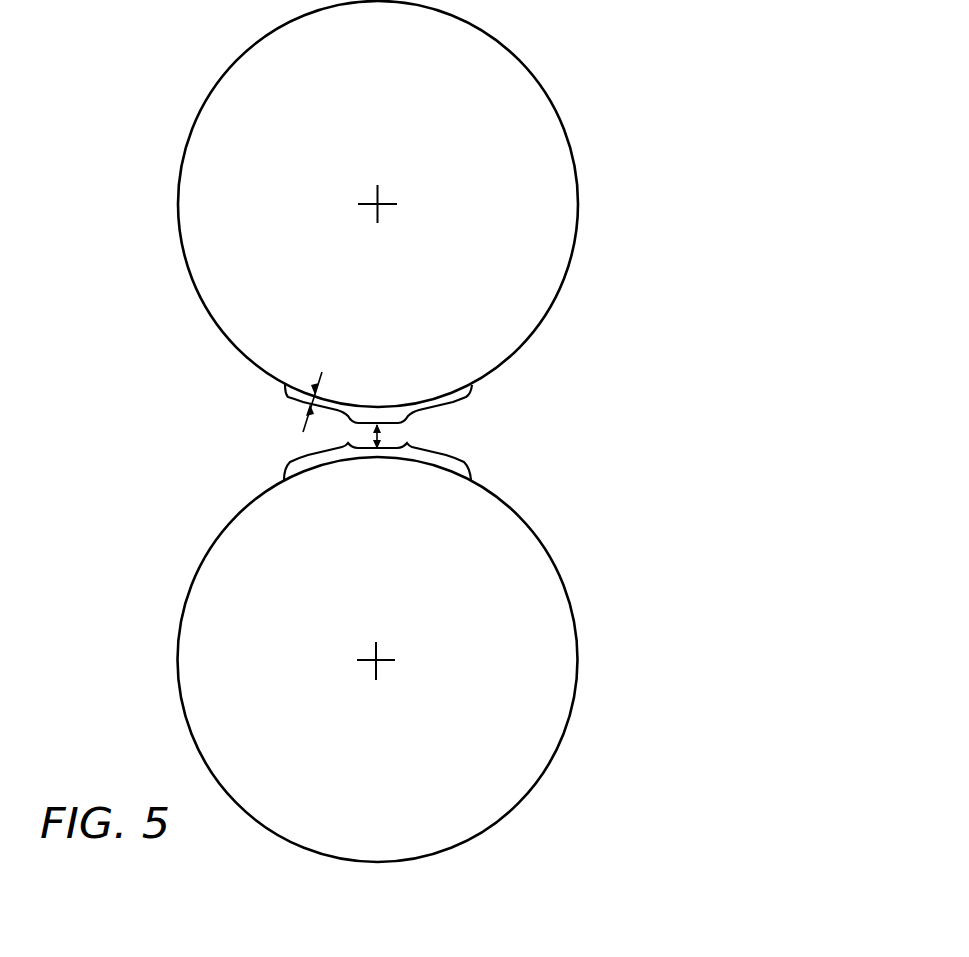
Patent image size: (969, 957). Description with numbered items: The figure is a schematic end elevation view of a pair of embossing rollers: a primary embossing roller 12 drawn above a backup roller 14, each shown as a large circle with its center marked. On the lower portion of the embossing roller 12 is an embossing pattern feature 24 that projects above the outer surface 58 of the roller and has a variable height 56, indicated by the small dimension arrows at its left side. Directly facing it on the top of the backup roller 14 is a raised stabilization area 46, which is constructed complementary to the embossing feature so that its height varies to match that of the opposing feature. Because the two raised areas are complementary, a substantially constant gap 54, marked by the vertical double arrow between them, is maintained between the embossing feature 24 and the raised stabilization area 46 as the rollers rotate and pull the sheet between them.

The embossing roller 12 is at (563, 195).
The backup roller 14 is at (537, 585).
The raised pattern element on first roll 24 is at (455, 405).
The raised stabilization area 46 is at (450, 458).
The gap 54 is at (347, 443).
The variable height 56 is at (303, 401).
The outer surface 58 is at (202, 297).